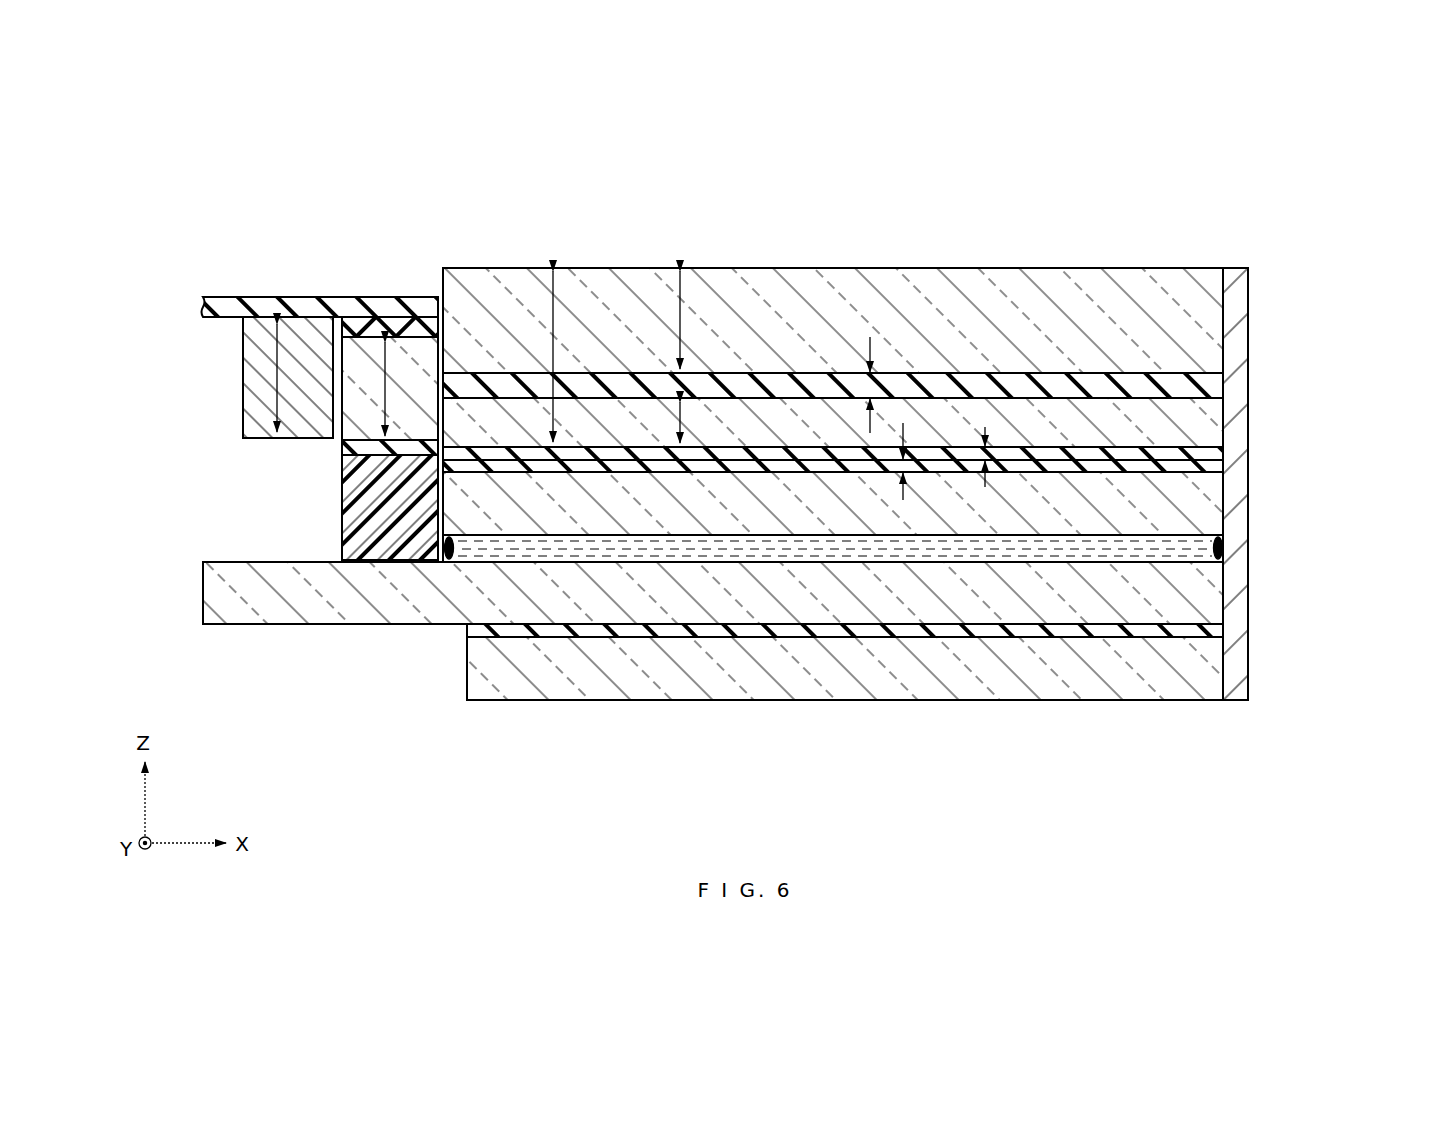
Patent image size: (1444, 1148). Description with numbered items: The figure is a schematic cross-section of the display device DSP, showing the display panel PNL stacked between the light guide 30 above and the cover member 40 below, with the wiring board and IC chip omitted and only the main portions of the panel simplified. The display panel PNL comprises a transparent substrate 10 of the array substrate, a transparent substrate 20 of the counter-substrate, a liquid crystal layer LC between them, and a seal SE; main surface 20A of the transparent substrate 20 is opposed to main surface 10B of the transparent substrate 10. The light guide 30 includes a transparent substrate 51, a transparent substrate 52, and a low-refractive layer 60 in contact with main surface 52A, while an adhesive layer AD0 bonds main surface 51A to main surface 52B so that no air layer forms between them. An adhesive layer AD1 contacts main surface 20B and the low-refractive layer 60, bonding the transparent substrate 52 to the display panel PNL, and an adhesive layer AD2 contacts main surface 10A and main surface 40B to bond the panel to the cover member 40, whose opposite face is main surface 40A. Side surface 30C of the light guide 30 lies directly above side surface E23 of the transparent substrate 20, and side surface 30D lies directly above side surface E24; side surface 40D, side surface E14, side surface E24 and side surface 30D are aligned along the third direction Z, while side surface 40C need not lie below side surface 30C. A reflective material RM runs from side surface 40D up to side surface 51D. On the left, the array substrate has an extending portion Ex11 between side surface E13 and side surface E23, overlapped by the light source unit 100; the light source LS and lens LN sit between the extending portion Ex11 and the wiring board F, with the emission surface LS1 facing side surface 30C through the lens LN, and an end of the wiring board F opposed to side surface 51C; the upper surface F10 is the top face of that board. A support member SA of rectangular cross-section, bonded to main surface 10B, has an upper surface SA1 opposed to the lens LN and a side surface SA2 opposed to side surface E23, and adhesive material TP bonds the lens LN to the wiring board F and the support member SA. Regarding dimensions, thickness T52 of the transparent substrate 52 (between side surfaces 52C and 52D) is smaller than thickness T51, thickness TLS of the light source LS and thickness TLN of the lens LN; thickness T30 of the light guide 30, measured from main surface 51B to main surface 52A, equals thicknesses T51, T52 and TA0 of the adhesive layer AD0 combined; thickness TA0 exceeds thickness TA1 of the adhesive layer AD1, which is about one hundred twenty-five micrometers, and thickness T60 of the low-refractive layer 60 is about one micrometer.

The light source unit 100 is at (190, 288).
The display device DSP is at (1285, 158).
The display panel PNL is at (1347, 507).
The light guide 30 is at (1162, 203).
The transparent substrate 51 is at (1216, 322).
The adhesive layer AD0 is at (1100, 385).
The transparent substrate 52 is at (1214, 437).
The low-refractive layer 60 is at (1002, 464).
The adhesive layer AD1 is at (1214, 466).
The transparent substrate 20 is at (1214, 490).
The liquid crystal layer LC is at (527, 548).
The seal SE is at (1214, 553).
The transparent substrate 10 is at (1215, 585).
The adhesive layer AD2 is at (1125, 632).
The cover member 40 is at (1185, 680).
The reflective material RM is at (1242, 300).
The wiring board F is at (236, 298).
The film top surface F10 is at (268, 295).
The light source LS is at (243, 367).
The thickness of light source TLS is at (272, 398).
The emission surface LS1 is at (340, 392).
The adhesive material TP is at (372, 332).
The lens LN is at (362, 350).
The thickness of lens TLN is at (362, 355).
The upper surface SA1 is at (345, 447).
The support member SA is at (342, 490).
The side surface SA2 is at (449, 488).
The side surface E23 is at (436, 513).
The extending portion Ex11 is at (215, 551).
The side surface E13 is at (199, 585).
The side surface 30C is at (497, 160).
The side surface 52C is at (436, 407).
The side surface 51C is at (436, 274).
The main surface 20B is at (611, 464).
The thickness of light guide T30 is at (557, 266).
The thickness of transparent substrate T51 is at (672, 263).
The thickness of transparent substrate T52 is at (684, 398).
The main surface 52A is at (816, 454).
The main surface 52B is at (822, 392).
The thickness of adhesive layer TA0 is at (869, 336).
The main surface 51B is at (926, 260).
The main surface 51A is at (942, 381).
The side surface 51D is at (1234, 345).
The side surface 52D is at (1234, 412).
The side surface 30D is at (1345, 340).
The side surface E24 is at (1234, 515).
The side surface E14 is at (1234, 615).
The side surface 40D is at (1234, 672).
The side surface 40C is at (464, 679).
The main surface 20A is at (609, 540).
The main surface 40A is at (712, 704).
The main surface 40B is at (745, 629).
The thickness of adhesive layer TA1 is at (903, 500).
The main surface 10B is at (960, 552).
The main surface 10A is at (970, 629).
The thickness of low-refractive layer T60 is at (1000, 470).